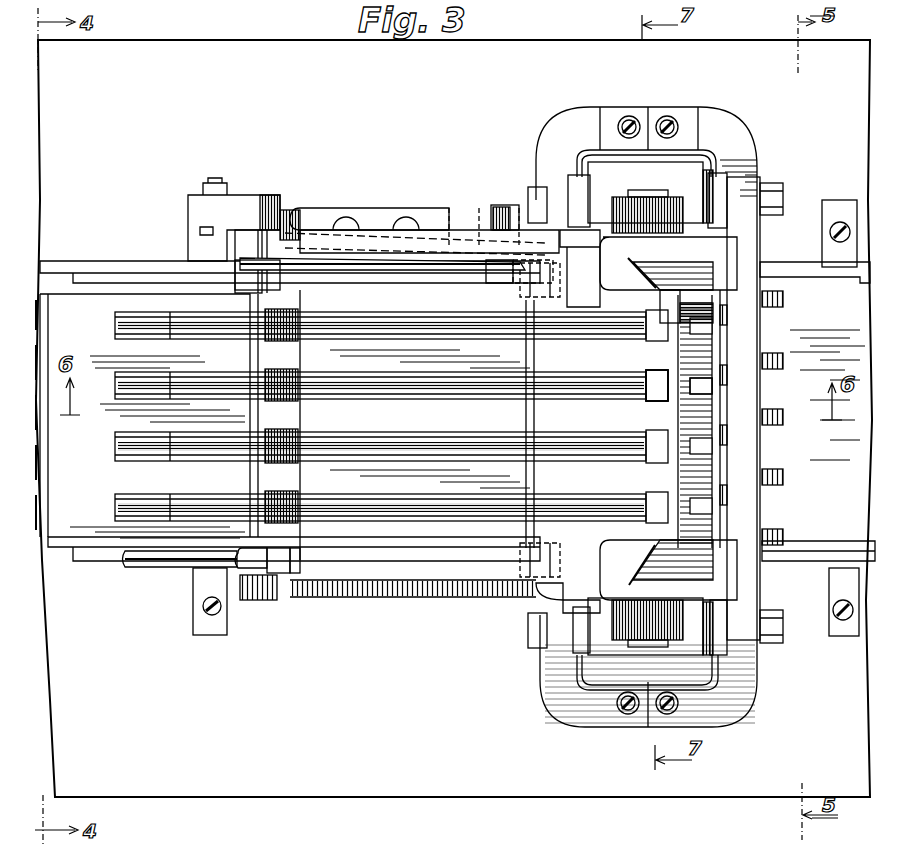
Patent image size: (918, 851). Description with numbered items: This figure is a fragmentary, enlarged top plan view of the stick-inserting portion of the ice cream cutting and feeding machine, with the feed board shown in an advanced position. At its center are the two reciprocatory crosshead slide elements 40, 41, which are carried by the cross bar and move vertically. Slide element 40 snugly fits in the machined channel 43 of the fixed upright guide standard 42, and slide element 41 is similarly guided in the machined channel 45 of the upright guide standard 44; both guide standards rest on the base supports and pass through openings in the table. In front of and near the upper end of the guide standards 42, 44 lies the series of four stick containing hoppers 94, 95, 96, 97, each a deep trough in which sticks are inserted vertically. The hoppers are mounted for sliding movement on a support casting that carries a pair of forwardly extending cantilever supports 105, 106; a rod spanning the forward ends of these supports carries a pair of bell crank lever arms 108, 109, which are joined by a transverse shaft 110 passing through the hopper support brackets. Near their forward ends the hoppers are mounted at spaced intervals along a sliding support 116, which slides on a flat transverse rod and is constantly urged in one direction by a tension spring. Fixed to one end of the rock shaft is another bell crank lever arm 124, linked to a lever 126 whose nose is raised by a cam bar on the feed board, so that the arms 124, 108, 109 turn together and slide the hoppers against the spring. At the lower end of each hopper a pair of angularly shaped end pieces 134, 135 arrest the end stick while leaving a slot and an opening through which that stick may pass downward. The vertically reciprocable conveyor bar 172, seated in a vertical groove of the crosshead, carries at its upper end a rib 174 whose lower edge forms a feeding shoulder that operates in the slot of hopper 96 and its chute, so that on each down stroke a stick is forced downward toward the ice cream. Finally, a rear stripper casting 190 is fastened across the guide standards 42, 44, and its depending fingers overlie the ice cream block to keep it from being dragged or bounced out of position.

The crosshead slide element 40 is at (650, 627).
The crosshead slide element 41 is at (610, 200).
The guide standard 42 is at (613, 655).
The machined channel 43 is at (610, 633).
The guide standard 44 is at (672, 167).
The machined channel 45 is at (682, 210).
The stick containing hopper 94 is at (125, 494).
The stick containing hopper 95 is at (125, 433).
The stick containing hopper 96 is at (115, 384).
The stick containing hopper 97 is at (114, 318).
The cantilever support 105 is at (343, 591).
The cantilever support 106 is at (371, 233).
The bell crank lever arm 108 is at (262, 562).
The bell crank lever arm 109 is at (282, 232).
The transverse shaft 110 is at (300, 235).
The sliding support 116 is at (526, 419).
The bell crank lever arm 124 is at (233, 210).
The lever 126 is at (497, 227).
The end piece 134 is at (645, 400).
The end piece 135 is at (642, 380).
The conveyor bar 172 is at (662, 400).
The rib 174 is at (692, 384).
The rear stripper casting 190 is at (742, 198).